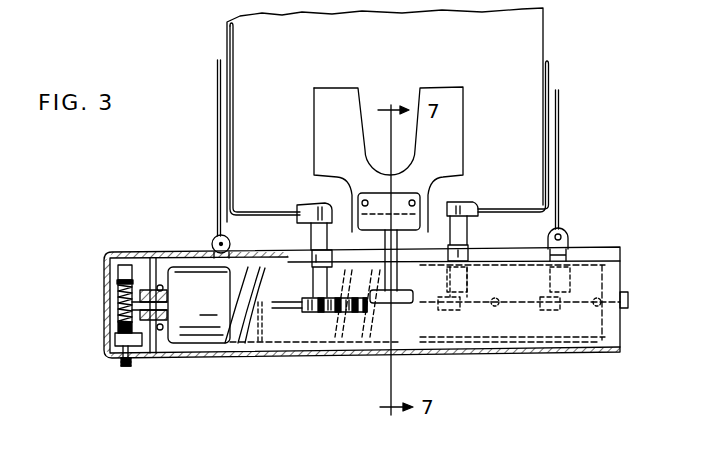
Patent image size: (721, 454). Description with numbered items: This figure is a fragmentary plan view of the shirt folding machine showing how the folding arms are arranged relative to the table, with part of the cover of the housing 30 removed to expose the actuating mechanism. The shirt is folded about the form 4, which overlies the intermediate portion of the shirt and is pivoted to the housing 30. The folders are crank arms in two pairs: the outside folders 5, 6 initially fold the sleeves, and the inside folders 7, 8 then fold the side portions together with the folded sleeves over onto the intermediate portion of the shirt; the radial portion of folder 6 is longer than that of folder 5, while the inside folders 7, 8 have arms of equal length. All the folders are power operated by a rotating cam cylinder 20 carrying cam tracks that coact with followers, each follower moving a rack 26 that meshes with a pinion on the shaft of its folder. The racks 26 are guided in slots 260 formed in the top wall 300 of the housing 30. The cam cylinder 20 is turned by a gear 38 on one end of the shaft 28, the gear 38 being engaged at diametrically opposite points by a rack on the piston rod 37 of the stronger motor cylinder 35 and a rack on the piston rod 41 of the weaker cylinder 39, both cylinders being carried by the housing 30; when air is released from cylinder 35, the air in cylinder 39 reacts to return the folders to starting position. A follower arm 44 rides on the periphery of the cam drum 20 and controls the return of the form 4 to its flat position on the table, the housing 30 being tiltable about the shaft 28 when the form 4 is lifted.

The form 4 is at (452, 110).
The outside folder 5 is at (558, 197).
The outside folder 6 is at (215, 204).
The inside folder 7 is at (550, 85).
The inside folder 8 is at (240, 210).
The cam cylinder 20 is at (216, 305).
The rack 26 is at (347, 300).
The shaft 28 is at (155, 283).
The housing 30 is at (275, 352).
The cylinder of the stronger motor 35 is at (108, 352).
The piston rod 37 is at (120, 332).
The gear 38 is at (122, 300).
The cylinder of the weaker unit 39 is at (118, 265).
The piston rod 41 is at (122, 283).
The follower arm 44 is at (397, 243).
The slot 260 is at (292, 289).
The top wall 300 is at (295, 323).